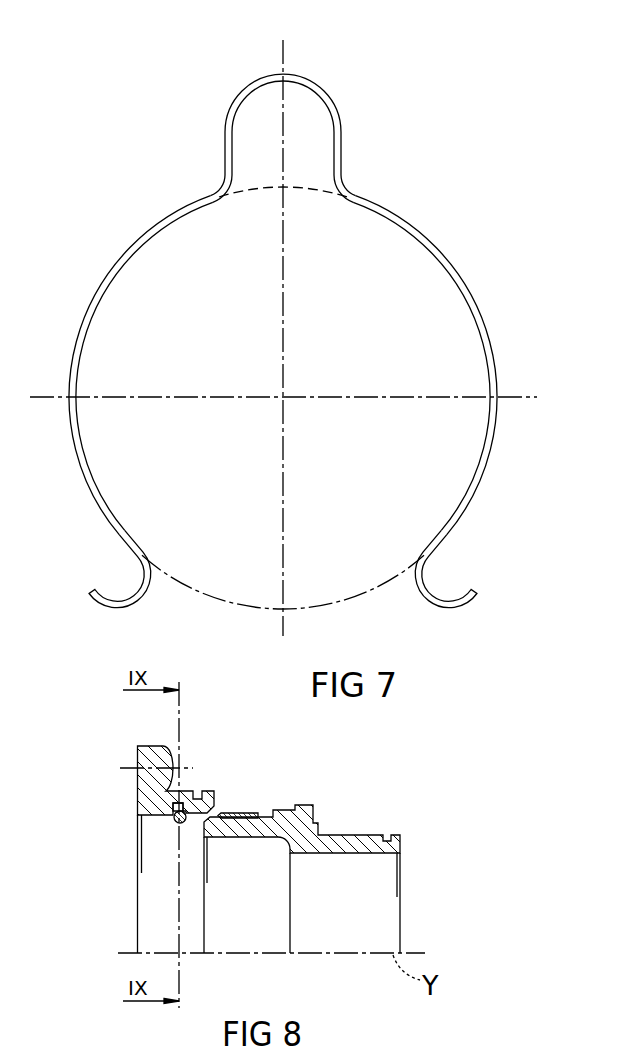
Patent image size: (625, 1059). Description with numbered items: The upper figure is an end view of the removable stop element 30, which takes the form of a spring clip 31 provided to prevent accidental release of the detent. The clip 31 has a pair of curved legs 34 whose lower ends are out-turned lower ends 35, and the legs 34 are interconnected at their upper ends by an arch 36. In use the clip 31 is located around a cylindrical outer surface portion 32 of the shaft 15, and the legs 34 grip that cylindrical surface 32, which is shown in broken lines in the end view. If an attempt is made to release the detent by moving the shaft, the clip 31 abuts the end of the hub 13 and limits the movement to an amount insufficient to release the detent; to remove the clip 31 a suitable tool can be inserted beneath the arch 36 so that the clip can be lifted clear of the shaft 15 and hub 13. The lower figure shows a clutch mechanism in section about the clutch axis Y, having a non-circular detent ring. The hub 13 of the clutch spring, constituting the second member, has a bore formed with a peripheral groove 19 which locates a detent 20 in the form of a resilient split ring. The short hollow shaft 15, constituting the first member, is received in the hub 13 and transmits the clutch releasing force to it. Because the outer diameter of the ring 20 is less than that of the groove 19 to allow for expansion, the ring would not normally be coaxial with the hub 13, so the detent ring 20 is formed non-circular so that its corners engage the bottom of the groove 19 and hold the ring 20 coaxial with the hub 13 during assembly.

In FIG. 7, the stop element 30 is at (293, 324).
In FIG. 7, the spring clip 31 is at (155, 228).
In FIG. 7, the cylindrical outer surface portion 32 is at (193, 587).
In FIG. 7, the curved legs 34 is at (110, 277).
In FIG. 7, the out-turned lower ends 35 is at (95, 600).
In FIG. 7, the arch 36 is at (320, 83).
In FIG. 8, the hub 13 is at (142, 757).
In FIG. 8, the shaft 15 is at (352, 855).
In FIG. 8, the peripheral groove 19 is at (175, 806).
In FIG. 8, the detent 20 is at (176, 821).